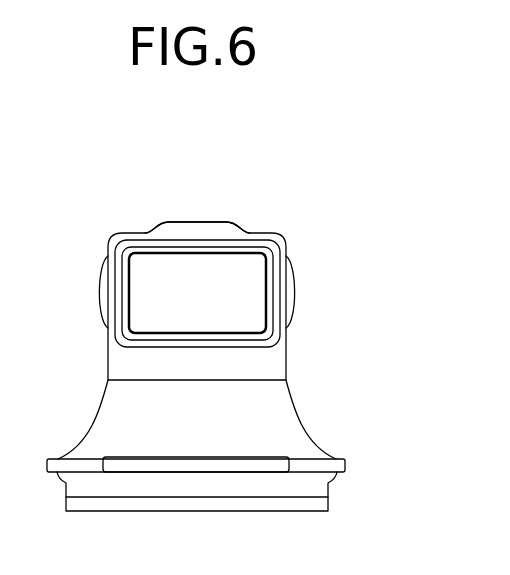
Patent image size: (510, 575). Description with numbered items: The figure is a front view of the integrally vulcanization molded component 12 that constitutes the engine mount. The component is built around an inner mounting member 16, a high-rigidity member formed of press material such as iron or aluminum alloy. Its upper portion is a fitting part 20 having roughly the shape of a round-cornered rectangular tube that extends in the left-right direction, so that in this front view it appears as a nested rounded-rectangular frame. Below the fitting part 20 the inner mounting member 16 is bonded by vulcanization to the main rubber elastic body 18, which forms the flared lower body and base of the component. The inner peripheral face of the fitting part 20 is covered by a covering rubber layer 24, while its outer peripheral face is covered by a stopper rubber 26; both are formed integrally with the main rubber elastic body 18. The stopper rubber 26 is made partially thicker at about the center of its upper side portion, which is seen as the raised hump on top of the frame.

The integrally vulcanization molded component 12 is at (333, 340).
The inner mounting member 16 is at (120, 249).
The main rubber elastic body 18 is at (130, 422).
The fitting part 20 is at (276, 283).
The covering rubber layer 24 is at (230, 252).
The stopper rubber 26 is at (182, 228).